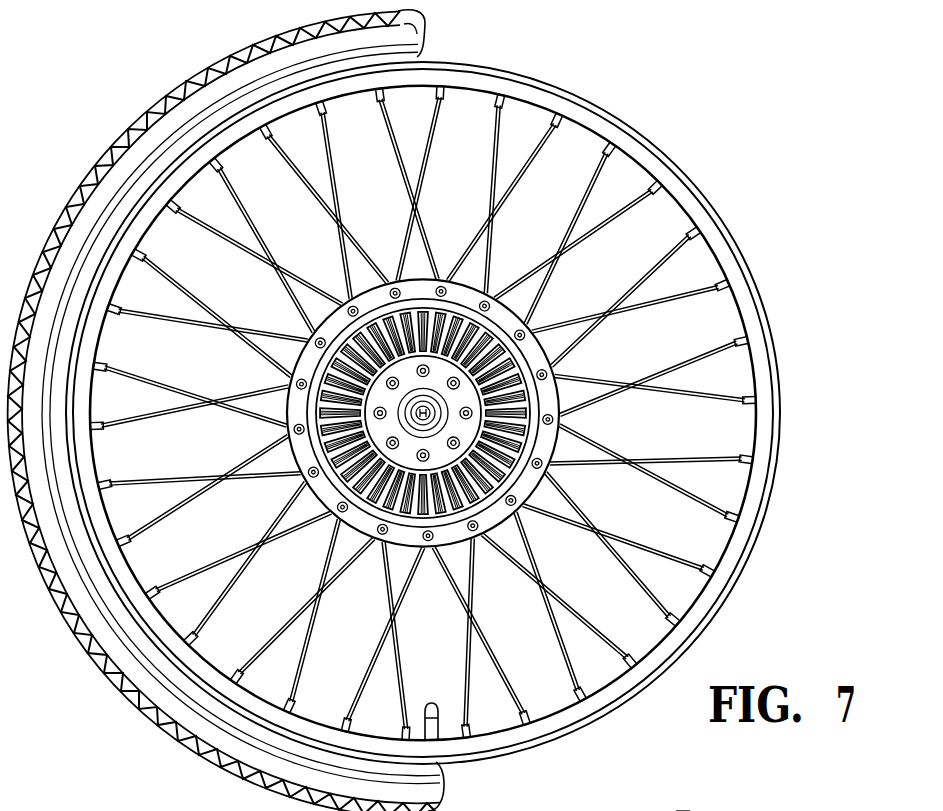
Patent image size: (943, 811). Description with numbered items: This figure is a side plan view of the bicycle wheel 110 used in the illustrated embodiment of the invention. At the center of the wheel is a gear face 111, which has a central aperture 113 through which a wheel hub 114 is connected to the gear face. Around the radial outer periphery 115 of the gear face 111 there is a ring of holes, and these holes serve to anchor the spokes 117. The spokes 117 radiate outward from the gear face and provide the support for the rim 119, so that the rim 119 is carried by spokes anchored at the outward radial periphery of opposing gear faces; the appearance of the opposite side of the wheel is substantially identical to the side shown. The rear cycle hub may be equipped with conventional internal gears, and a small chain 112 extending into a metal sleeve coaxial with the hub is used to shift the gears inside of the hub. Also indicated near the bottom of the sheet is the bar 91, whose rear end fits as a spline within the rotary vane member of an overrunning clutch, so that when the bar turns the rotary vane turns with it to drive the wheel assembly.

The wheel 110 is at (695, 108).
The gear face 111 is at (566, 412).
The small chain 112 is at (432, 416).
The central aperture 113 is at (525, 503).
The wheel hub 114 is at (549, 471).
The radial outer periphery 115 is at (508, 314).
The spokes 117 is at (653, 310).
The rim 119 is at (753, 318).
The bar 91 is at (680, 810).